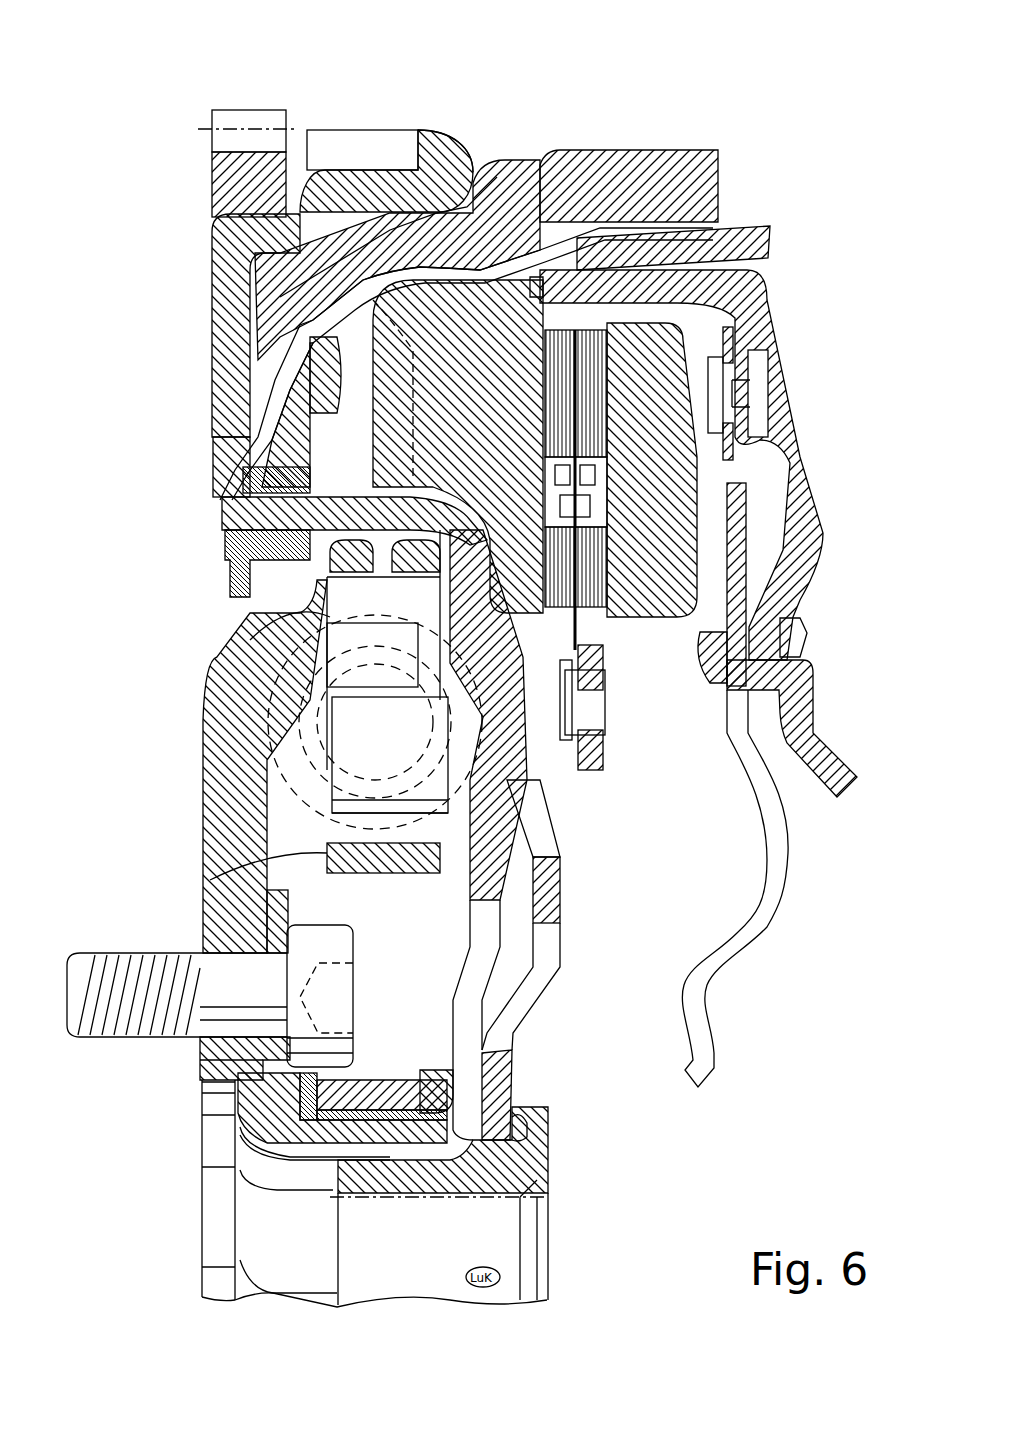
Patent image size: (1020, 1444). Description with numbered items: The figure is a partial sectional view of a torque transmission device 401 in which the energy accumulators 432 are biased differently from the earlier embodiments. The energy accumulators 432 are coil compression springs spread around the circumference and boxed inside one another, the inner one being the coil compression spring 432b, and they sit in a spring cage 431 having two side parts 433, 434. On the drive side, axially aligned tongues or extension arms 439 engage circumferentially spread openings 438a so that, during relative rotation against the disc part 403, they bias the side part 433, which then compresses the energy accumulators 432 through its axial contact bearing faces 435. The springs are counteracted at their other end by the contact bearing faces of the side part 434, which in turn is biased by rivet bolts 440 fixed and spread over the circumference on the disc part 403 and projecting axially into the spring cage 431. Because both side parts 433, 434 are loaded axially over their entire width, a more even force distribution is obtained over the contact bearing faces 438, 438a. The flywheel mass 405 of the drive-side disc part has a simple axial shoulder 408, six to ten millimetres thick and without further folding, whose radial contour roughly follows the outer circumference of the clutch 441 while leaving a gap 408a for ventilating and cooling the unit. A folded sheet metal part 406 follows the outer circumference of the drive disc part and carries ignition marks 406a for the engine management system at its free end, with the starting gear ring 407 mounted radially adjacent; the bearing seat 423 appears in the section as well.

The torque transmission device 401 is at (712, 100).
The disc part 403 is at (495, 878).
The flywheel mass 405 is at (455, 116).
The folded sheet metal part 406 is at (222, 312).
The ignition marks 406a is at (345, 140).
The starting gear ring 407 is at (232, 183).
The axial shoulder 408 is at (577, 175).
The gap 408a is at (700, 230).
The bearing seat 423 is at (282, 800).
The spring cage 431 is at (450, 843).
The energy accumulators 432 is at (300, 716).
The coil compression spring 432b is at (250, 745).
The side part 433 is at (327, 853).
The side part 434 is at (412, 873).
The axial contact bearing faces 435 is at (420, 636).
The contact bearing faces 438 is at (293, 647).
The openings 438a is at (312, 620).
The extension arms 439 is at (425, 655).
The rivet bolts 440 is at (405, 752).
The clutch 441 is at (808, 264).